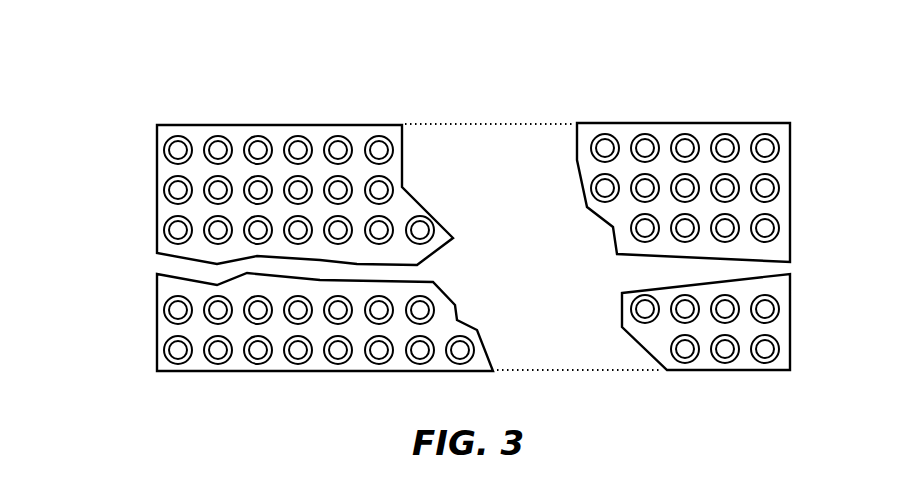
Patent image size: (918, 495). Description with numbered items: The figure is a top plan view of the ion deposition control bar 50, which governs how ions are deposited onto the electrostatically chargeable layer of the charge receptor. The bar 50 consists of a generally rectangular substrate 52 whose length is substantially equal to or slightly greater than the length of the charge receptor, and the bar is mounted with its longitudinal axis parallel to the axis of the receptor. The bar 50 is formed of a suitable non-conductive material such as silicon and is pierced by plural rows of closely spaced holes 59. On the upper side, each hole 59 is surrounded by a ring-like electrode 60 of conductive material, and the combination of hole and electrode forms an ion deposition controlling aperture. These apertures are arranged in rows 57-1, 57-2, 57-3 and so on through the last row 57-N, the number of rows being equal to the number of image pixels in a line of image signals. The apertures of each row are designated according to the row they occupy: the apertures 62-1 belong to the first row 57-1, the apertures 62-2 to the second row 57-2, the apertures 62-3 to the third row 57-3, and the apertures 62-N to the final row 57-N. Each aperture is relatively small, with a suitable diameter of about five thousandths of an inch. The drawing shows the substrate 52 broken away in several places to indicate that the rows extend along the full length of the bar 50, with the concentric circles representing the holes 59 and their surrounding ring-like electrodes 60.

The ion deposition control bar 50 is at (280, 97).
The substrate 52 is at (790, 130).
The first row of ion deposition controlling apertures 57-1 is at (413, 106).
The second row of ion deposition controlling apertures 57-2 is at (415, 145).
The third row of ion deposition controlling apertures 57-3 is at (417, 155).
The nth row of ion deposition controlling apertures 57-N is at (416, 387).
The holes 59 is at (378, 148).
The ring-like electrode 60 is at (393, 217).
The apertures of the first row 62-1 is at (219, 148).
The apertures of the second row 62-2 is at (341, 189).
The apertures of the third row 62-3 is at (724, 226).
The apertures of the nth row 62-N is at (337, 353).